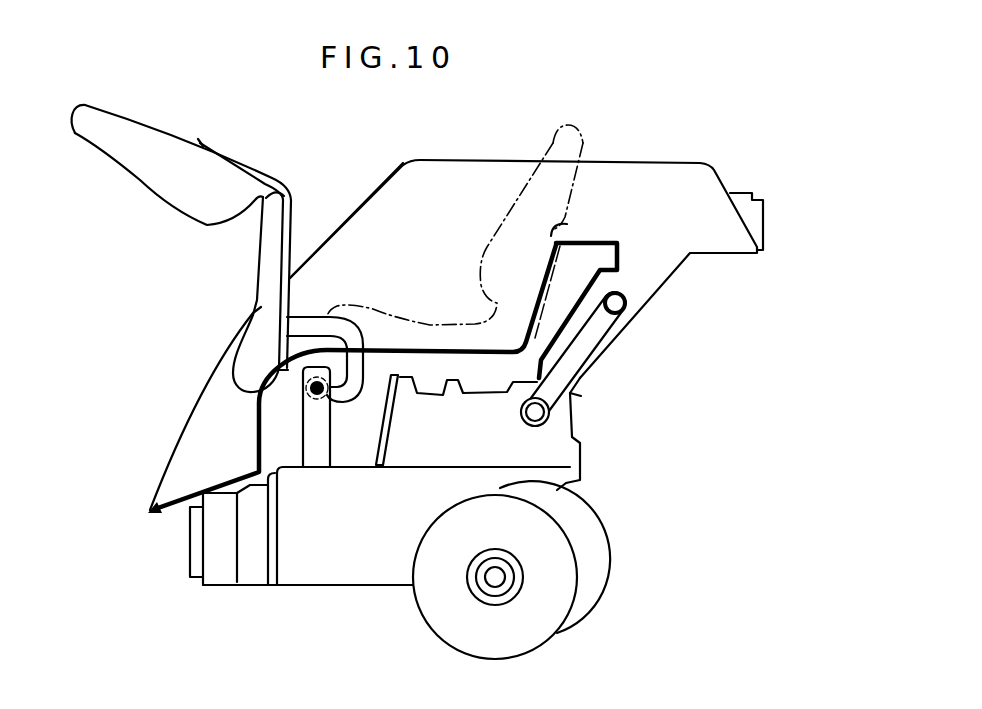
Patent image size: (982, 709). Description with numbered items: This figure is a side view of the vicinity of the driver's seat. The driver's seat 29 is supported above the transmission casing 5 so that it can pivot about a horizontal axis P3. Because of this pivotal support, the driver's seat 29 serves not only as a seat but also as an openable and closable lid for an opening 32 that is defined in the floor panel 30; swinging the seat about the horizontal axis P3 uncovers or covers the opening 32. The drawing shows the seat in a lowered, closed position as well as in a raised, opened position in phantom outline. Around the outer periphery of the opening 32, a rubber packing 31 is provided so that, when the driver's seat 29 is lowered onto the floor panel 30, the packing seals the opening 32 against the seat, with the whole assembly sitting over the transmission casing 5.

The driver's seat 29 is at (583, 133).
The floor panel 30 is at (258, 420).
The rubber packing 31 is at (580, 225).
The opening 32 is at (427, 368).
The transmission casing 5 is at (580, 446).
The horizontal axis P3 is at (324, 396).